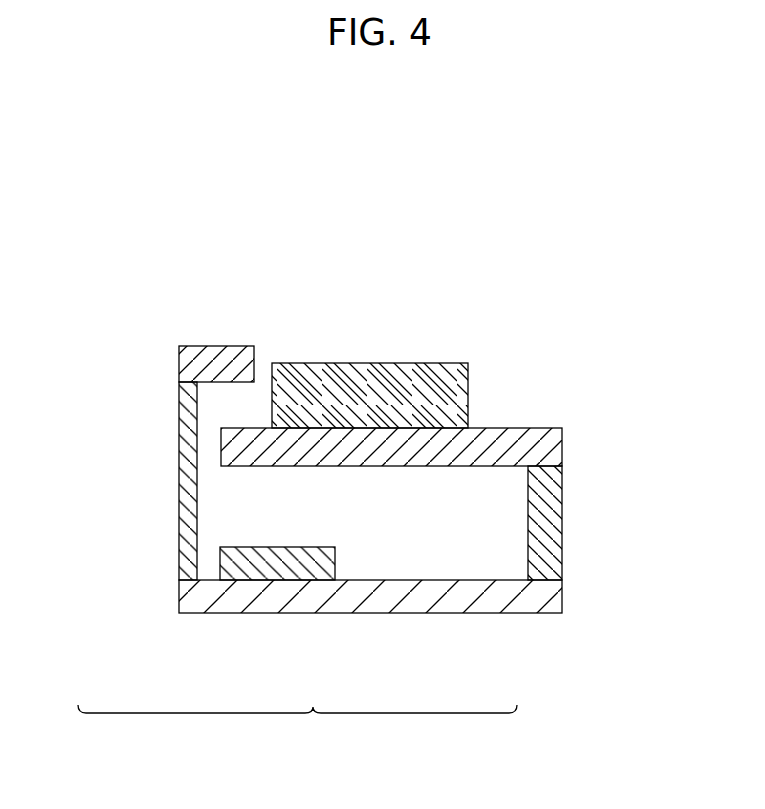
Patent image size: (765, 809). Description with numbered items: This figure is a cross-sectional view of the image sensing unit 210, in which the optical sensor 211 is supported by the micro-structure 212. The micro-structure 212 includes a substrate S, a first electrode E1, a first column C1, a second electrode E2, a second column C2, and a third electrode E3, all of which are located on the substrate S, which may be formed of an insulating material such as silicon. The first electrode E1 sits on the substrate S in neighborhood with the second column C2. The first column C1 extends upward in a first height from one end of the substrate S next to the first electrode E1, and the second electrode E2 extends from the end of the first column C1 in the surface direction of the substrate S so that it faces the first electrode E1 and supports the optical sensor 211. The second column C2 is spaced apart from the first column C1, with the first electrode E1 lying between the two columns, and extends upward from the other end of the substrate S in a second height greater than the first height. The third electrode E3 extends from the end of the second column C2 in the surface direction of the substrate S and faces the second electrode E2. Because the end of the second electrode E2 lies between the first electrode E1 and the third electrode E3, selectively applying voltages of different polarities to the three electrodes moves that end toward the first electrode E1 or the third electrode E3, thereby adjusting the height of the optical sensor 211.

The image sensing unit 210 is at (377, 227).
The optical sensor 211 is at (355, 385).
The micro-structure 212 is at (297, 726).
The first electrode E1 is at (277, 567).
The second electrode E2 is at (415, 450).
The third electrode E3 is at (197, 362).
The first column C1 is at (540, 532).
The second column C2 is at (188, 507).
The substrate S is at (348, 613).